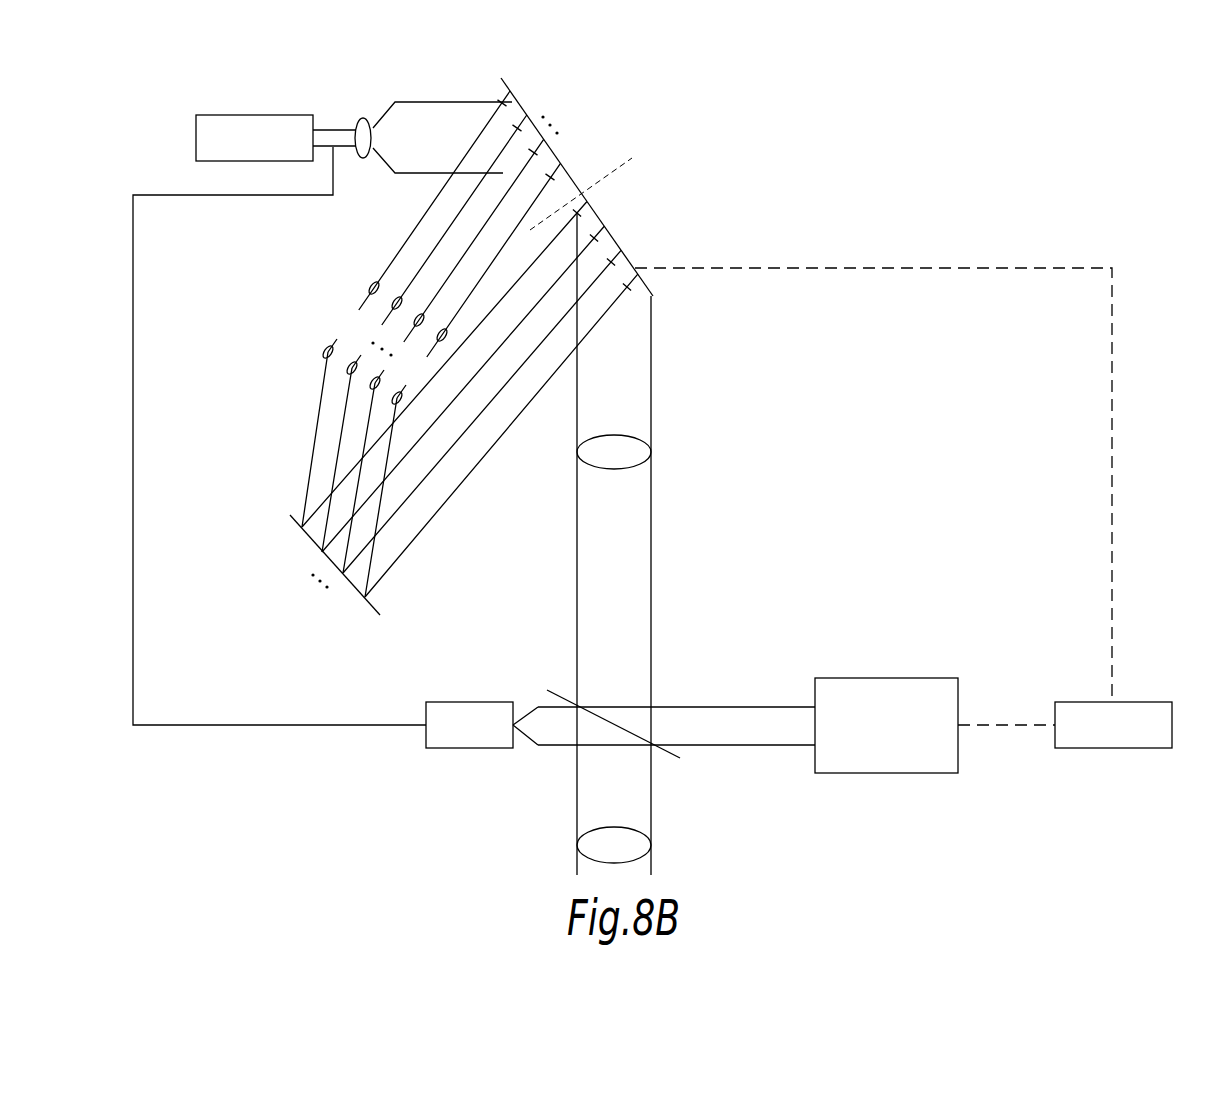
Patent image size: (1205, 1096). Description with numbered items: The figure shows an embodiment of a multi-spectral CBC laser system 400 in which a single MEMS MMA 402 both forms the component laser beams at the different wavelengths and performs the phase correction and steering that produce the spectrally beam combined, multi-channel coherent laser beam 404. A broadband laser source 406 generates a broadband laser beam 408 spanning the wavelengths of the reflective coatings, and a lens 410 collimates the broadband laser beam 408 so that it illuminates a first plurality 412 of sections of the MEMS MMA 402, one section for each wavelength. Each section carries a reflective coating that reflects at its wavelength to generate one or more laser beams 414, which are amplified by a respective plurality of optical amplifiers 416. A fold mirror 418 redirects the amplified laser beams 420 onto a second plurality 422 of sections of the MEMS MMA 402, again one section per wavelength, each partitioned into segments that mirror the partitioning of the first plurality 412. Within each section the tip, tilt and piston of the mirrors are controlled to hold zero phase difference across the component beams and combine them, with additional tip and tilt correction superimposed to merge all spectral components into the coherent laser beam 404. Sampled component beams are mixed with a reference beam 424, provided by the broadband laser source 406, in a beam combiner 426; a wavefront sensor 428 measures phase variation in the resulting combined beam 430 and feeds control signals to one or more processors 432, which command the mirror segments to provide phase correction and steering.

The multi-spectral CBC laser system 400 is at (1007, 160).
The MEMS MMA 402 is at (677, 119).
The spectrally beam combined, multi-channel coherent laser beam 404 is at (651, 845).
The broadband laser source 406 is at (254, 115).
The broadband laser beam 408 is at (410, 102).
The lens 410 is at (363, 118).
The first plurality of sections 412 is at (606, 77).
The laser beams 414 is at (407, 240).
The optical amplifiers 416 is at (332, 316).
The fold mirror 418 is at (312, 577).
The amplified laser beams 420 is at (503, 531).
The second plurality of sections 422 is at (657, 204).
The reference beam 424 is at (470, 702).
The beam combiner 426 is at (553, 680).
The wavefront sensor 428 is at (959, 690).
The combined beam 430 is at (716, 707).
The processors 432 is at (1112, 749).